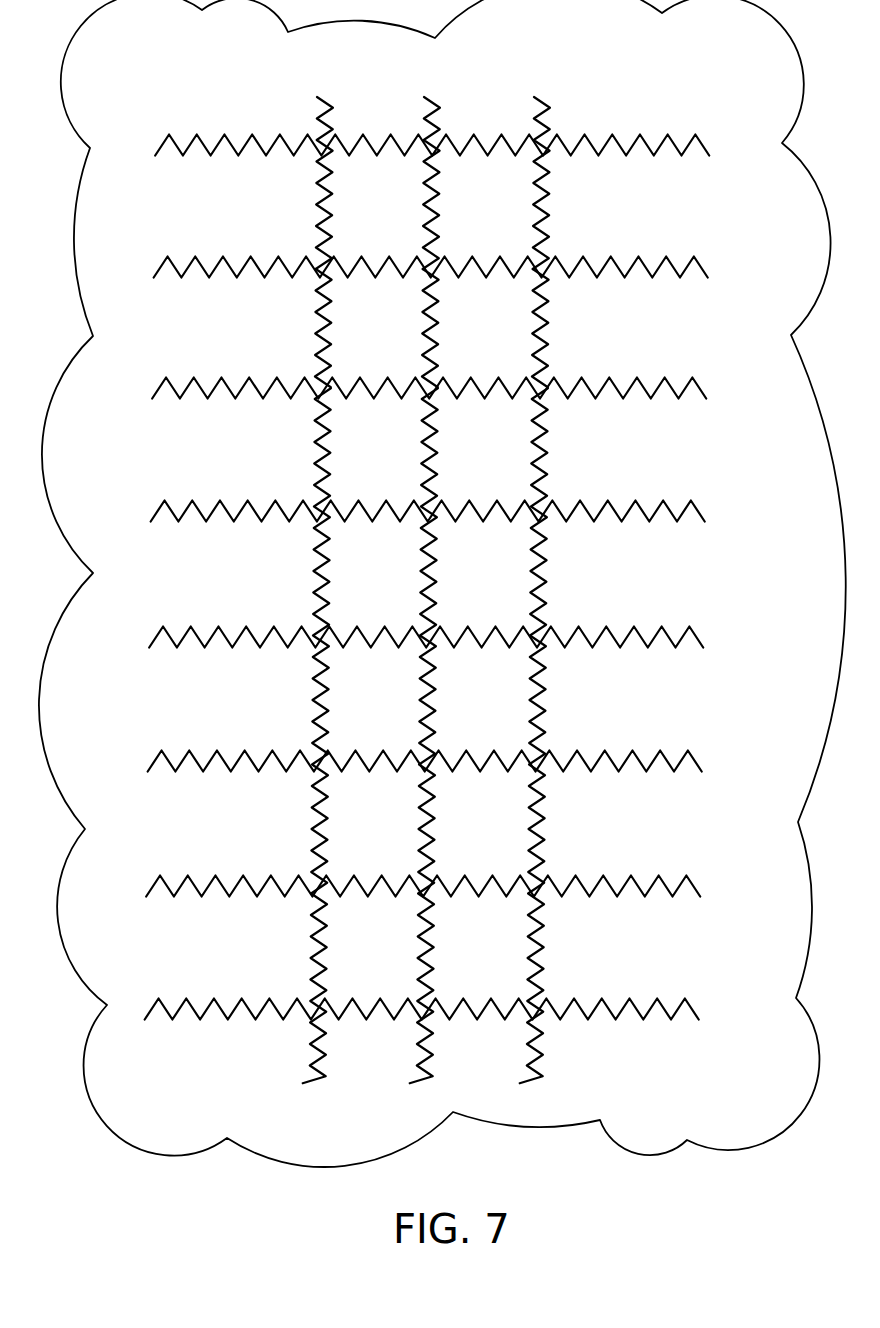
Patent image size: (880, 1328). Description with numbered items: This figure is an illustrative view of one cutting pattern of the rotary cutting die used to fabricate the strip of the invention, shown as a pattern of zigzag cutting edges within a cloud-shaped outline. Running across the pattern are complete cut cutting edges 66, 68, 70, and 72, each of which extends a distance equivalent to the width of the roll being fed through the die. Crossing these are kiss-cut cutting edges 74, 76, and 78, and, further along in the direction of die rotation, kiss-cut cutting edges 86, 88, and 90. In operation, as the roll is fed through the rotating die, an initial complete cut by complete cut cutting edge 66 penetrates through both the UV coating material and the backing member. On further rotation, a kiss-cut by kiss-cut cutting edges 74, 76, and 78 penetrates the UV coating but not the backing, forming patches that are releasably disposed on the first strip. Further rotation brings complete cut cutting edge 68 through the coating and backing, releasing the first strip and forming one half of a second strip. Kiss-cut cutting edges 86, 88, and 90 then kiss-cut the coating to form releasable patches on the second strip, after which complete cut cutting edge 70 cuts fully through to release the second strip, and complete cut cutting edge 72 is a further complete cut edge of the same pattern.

The complete cut cutting edge 66 is at (702, 141).
The complete cut cutting edge 68 is at (701, 261).
The complete cut cutting edge 70 is at (701, 387).
The complete cut cutting edge 72 is at (699, 510).
The kiss-cut cutting edge 74 is at (551, 205).
The kiss-cut cutting edge 76 is at (441, 192).
The kiss-cut cutting edge 78 is at (331, 192).
The kiss-cut cutting edge 86 is at (552, 328).
The kiss-cut cutting edge 88 is at (446, 331).
The kiss-cut cutting edge 90 is at (318, 313).